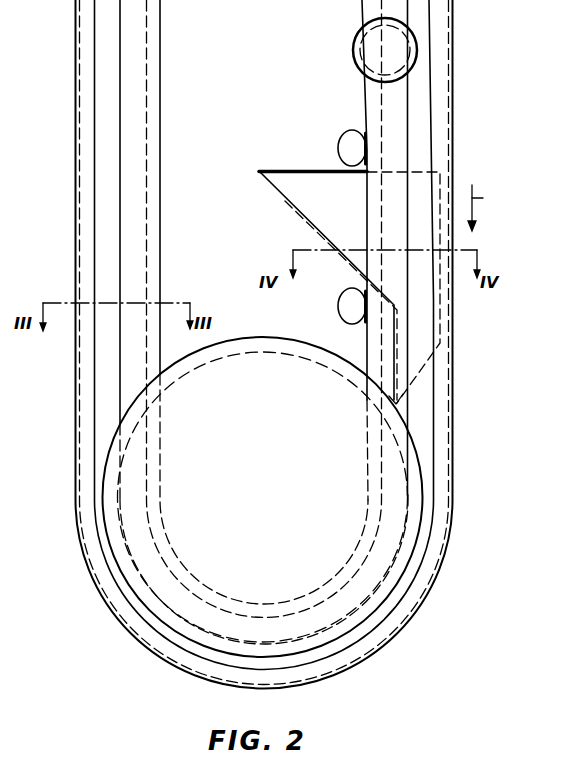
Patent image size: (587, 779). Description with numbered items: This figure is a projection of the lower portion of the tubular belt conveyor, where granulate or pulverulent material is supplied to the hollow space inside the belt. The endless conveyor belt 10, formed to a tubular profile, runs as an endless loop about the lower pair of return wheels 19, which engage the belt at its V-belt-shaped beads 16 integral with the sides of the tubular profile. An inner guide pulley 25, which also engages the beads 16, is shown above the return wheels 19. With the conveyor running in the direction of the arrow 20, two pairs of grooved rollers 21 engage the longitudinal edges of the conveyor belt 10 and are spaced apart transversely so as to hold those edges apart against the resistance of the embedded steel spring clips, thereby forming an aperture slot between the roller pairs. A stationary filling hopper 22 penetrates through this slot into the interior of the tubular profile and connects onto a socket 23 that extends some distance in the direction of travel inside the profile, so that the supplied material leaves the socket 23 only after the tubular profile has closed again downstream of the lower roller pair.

The endless conveyor belt 10 is at (443, 385).
The beads 16 is at (427, 141).
The lower pair of return wheels 19 is at (285, 350).
The arrow 20 is at (490, 208).
The grooved rollers 21 is at (344, 133).
The stationary filling hopper 22 is at (296, 172).
The socket 23 is at (441, 320).
The inner guide pulleys 25 is at (357, 38).